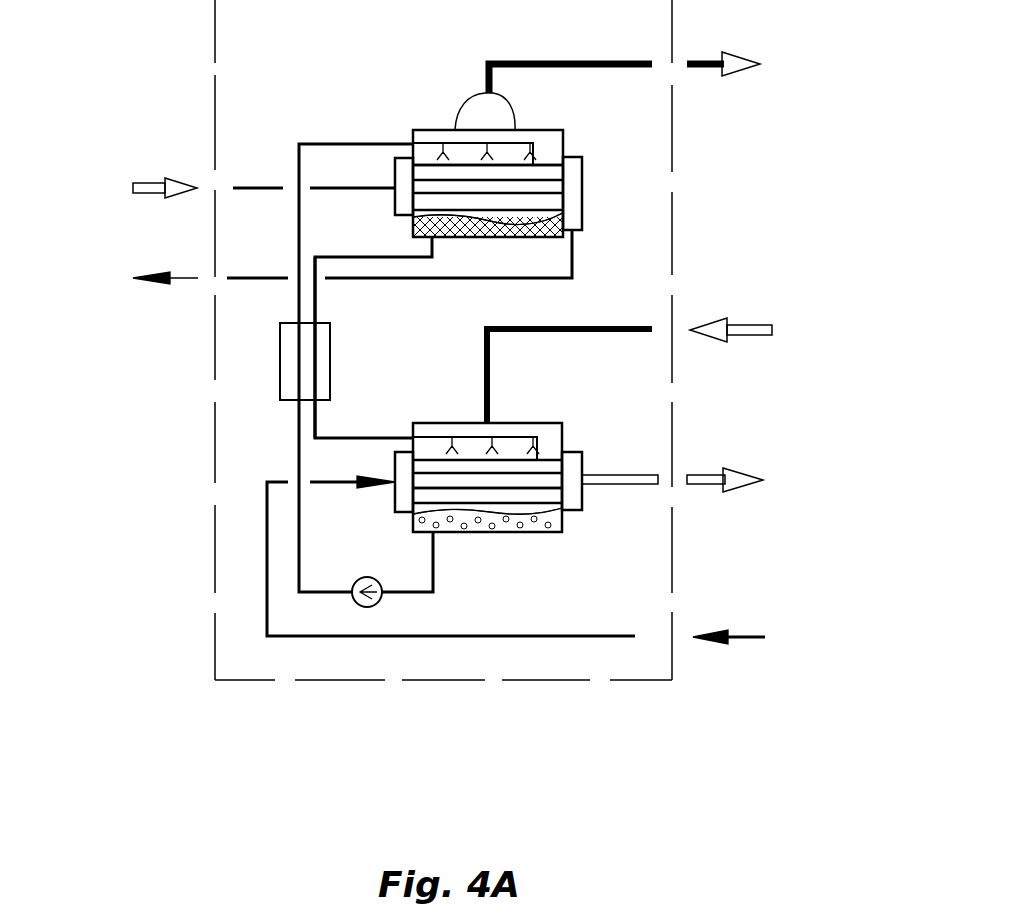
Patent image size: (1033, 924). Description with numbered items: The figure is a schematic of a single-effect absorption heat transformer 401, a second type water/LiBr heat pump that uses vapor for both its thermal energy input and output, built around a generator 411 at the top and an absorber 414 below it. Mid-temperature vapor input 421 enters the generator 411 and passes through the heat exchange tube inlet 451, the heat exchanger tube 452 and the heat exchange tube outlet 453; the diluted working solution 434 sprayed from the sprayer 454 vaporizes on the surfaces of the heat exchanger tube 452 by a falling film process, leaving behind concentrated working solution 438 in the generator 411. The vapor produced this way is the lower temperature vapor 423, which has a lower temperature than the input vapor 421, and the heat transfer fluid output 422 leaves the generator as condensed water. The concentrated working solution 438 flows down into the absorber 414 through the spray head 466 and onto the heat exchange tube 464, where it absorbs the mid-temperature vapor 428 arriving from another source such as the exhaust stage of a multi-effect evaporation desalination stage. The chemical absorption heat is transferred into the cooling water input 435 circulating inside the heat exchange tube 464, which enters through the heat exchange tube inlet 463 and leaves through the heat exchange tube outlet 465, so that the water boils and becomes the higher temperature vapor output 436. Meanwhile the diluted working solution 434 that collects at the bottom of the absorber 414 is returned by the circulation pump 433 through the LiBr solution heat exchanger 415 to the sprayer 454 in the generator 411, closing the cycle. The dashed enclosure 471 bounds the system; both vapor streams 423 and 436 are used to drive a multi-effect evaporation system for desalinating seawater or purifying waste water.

The heat transformer 401 is at (213, 115).
The generator 411 is at (458, 130).
The absorber 414 is at (562, 425).
The LiBr solution heat exchanger 415 is at (285, 352).
The mid-temperature vapor input 421 is at (133, 190).
The heat transfer fluid output 422 is at (133, 278).
The lower temperature vapor 423 is at (727, 57).
The mid-temperature vapor 428 is at (727, 321).
The circulation pump 433 is at (367, 607).
The diluted working solution 434 is at (513, 522).
The cooling water input 435 is at (733, 630).
The higher temperature vapor output 436 is at (728, 475).
The concentrated working solution 438 is at (513, 220).
The heat exchange tube inlet 451 is at (397, 163).
The heat exchanger tube 452 is at (436, 177).
The heat exchange tube outlet 453 is at (582, 163).
The sprayer 454 is at (452, 158).
The heat exchange tube inlet 463 is at (315, 297).
The heat exchange tube 464 is at (477, 487).
The heat exchange tube outlet 465 is at (397, 463).
The spray head 466 is at (450, 424).
The recirculation loop 471 is at (299, 198).